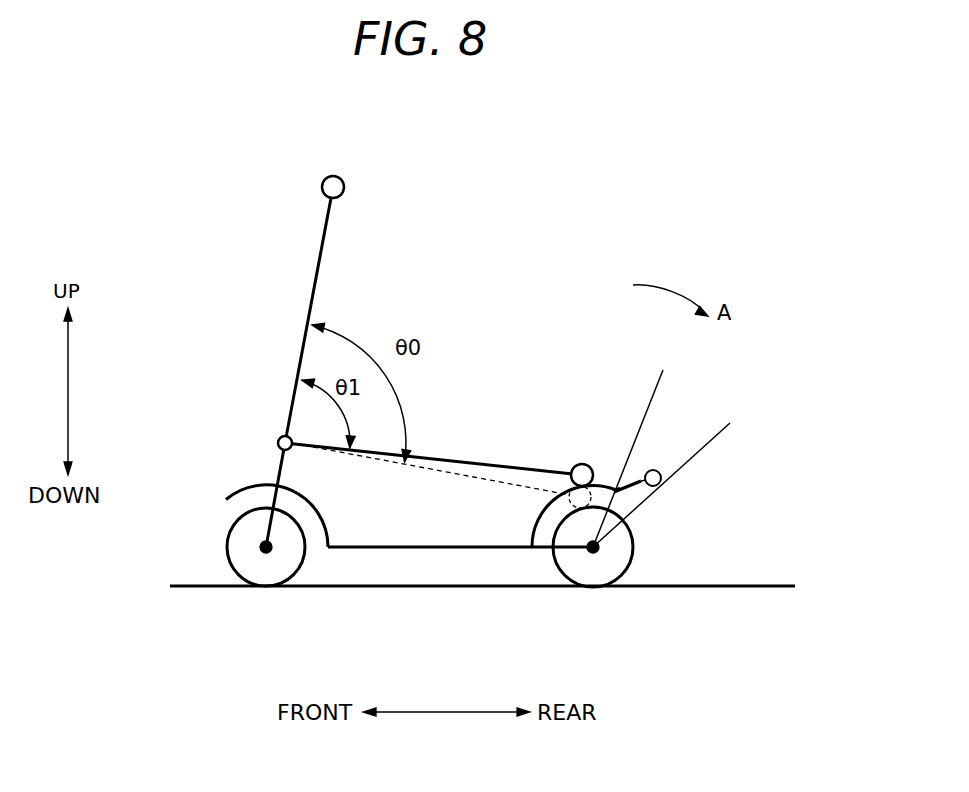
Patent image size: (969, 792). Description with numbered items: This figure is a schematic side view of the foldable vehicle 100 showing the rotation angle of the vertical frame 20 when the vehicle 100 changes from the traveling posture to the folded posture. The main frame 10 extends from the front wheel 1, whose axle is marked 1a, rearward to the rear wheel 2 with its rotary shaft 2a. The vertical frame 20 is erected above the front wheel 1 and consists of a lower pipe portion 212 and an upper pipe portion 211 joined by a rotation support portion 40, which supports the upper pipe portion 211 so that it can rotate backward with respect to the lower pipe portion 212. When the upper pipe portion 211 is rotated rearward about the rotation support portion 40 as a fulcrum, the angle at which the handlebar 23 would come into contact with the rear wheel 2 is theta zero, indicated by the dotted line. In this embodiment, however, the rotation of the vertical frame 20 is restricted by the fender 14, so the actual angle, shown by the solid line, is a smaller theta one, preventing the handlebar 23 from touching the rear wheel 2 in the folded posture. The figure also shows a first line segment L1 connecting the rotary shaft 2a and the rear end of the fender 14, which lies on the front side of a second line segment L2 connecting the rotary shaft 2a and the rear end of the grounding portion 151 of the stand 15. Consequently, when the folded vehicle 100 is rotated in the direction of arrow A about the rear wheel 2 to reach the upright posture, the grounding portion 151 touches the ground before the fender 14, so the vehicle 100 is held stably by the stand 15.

The vehicle 100 is at (642, 232).
The front wheel 1 is at (228, 543).
The front axle 1a is at (263, 553).
The rear wheel 2 is at (636, 556).
The rotary shaft 2a is at (592, 553).
The main frame 10 is at (432, 550).
The fender 14 is at (615, 485).
The stand 15 is at (637, 491).
The grounding portion 151 is at (658, 470).
The vertical frame 20 is at (394, 354).
The upper pipe portion 211 is at (312, 280).
The lower pipe portion 212 is at (276, 466).
The handlebar 23 is at (345, 185).
The rotation support portion 40 is at (278, 438).
The first line segment L1 is at (635, 447).
The second line segment L2 is at (672, 475).